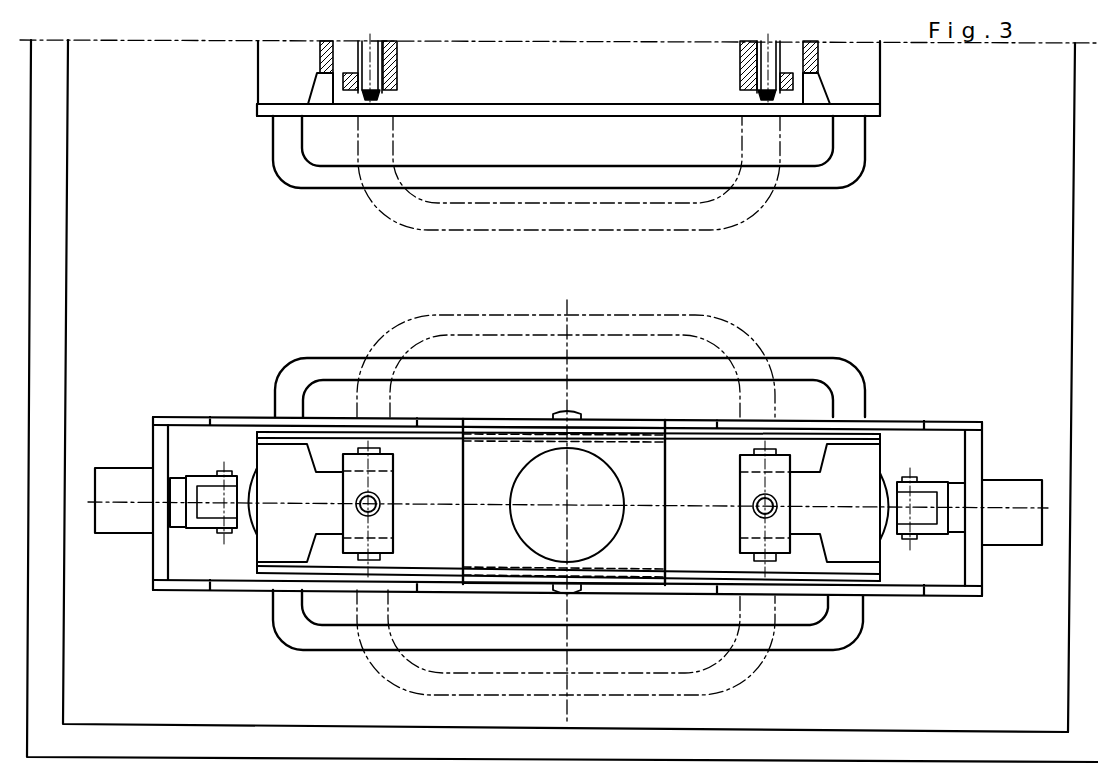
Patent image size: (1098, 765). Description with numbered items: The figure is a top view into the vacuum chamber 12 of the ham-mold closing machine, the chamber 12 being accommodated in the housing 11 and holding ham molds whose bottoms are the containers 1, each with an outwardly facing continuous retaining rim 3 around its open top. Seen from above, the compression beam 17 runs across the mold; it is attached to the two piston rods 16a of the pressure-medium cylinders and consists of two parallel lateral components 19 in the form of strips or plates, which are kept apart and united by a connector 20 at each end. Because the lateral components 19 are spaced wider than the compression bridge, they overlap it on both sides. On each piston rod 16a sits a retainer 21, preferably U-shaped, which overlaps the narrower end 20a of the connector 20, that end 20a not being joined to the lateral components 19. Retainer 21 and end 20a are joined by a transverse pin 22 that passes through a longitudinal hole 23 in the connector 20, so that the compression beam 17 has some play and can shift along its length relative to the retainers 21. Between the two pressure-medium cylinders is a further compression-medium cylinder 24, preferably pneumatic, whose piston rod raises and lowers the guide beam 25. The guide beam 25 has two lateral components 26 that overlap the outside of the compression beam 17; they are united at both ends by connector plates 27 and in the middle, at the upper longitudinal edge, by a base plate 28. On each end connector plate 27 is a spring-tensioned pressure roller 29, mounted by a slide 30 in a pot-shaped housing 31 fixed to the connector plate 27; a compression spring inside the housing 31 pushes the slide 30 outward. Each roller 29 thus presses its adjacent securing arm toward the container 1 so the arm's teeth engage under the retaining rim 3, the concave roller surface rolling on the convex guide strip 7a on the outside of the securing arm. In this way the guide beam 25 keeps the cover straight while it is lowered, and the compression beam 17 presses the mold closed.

The container 1 is at (788, 192).
The retaining rim 3 is at (403, 193).
The guide strip 7a is at (870, 433).
The housing 11 is at (1087, 363).
The chamber 12 is at (910, 270).
The piston rod 16a is at (393, 495).
The compression beam 17 is at (569, 74).
The lateral components 19 is at (567, 108).
The connector 20 is at (273, 48).
The narrower ends 20a is at (374, 64).
The retainer 21 is at (383, 462).
The transverse pin 22 is at (393, 74).
The longitudinal hole 23 is at (347, 55).
The compression-medium cylinder 24 is at (607, 497).
The guide beam 25 is at (254, 595).
The lateral components 26 is at (251, 417).
The connector plate 27 is at (160, 547).
The base plate 28 is at (513, 553).
The pressure roller 29 is at (213, 480).
The slide 30 is at (191, 482).
The pot-shaped housing 31 is at (123, 517).